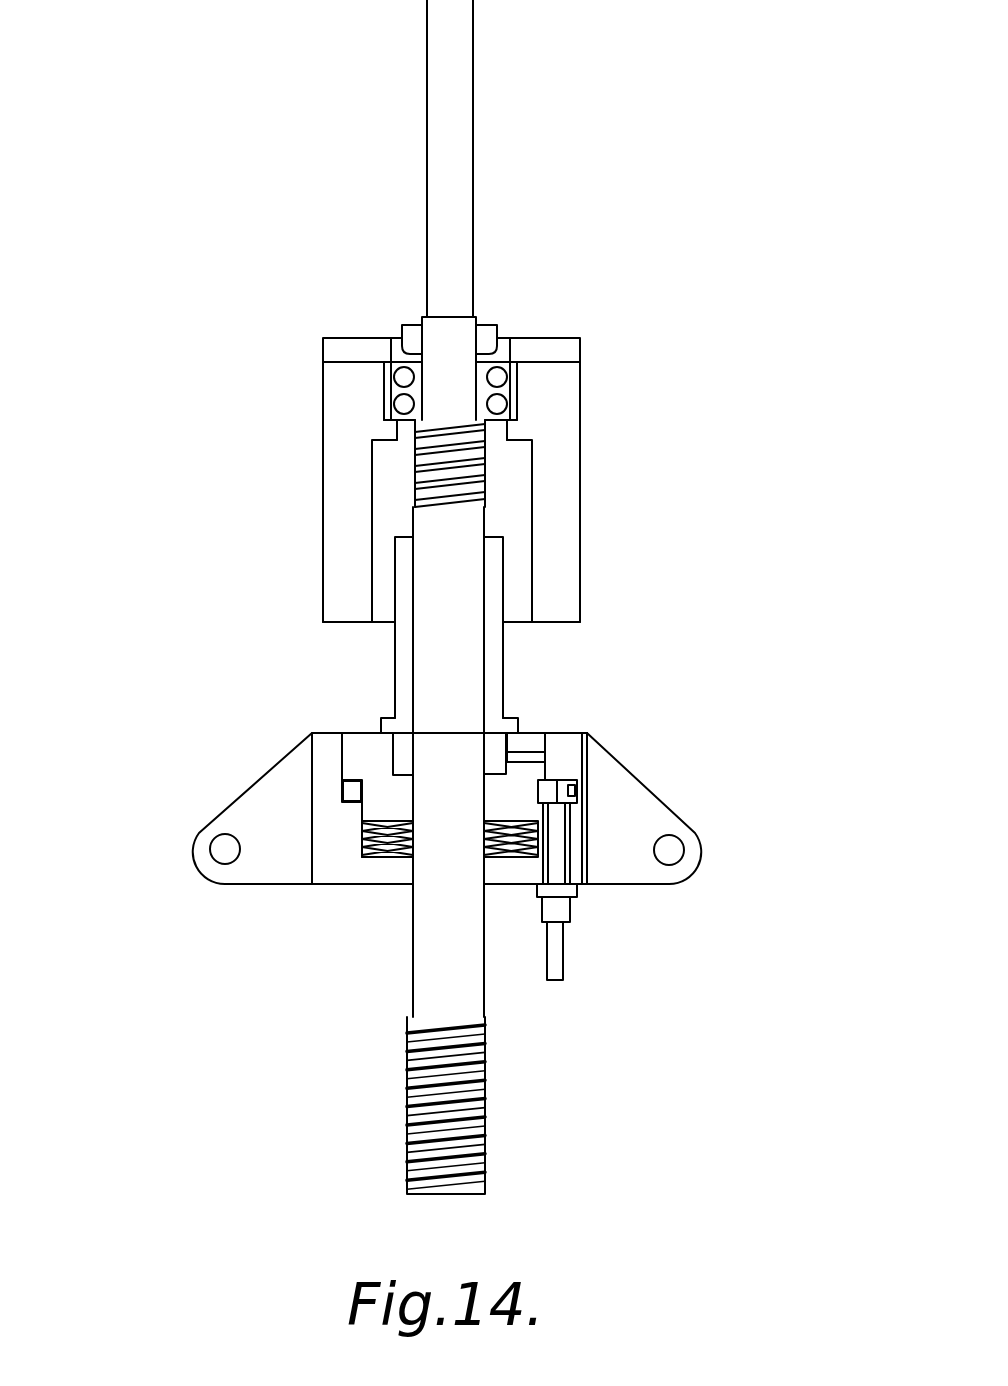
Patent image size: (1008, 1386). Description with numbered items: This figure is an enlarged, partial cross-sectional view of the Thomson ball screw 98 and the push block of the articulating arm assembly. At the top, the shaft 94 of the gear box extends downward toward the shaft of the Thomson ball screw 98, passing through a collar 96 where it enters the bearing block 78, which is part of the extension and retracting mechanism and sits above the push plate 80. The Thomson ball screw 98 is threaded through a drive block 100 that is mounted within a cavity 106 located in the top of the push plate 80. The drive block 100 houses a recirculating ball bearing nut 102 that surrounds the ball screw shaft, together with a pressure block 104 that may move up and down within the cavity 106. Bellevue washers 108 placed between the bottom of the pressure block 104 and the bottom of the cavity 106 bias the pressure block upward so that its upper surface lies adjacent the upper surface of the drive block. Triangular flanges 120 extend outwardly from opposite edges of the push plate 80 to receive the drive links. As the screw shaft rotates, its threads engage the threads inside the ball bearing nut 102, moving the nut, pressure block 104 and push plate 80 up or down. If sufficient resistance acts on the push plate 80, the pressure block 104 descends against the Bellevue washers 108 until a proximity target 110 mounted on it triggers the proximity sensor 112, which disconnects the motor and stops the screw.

The shaft of the gear box 94 is at (465, 69).
The collar / seal 96 is at (503, 339).
The bearing block 78 is at (589, 446).
The drive block 100 is at (360, 724).
The recirculating ball bearing nut 102 is at (498, 687).
The pressure block 104 is at (518, 788).
The cavity 106 is at (345, 790).
The proximity target 110 is at (576, 790).
The push plate 80 is at (673, 806).
The triangular flanges 120 is at (197, 837).
The Bellevue washers 108 is at (367, 858).
The proximity sensor 112 is at (575, 907).
The Thomson ball screw 98 is at (407, 1013).